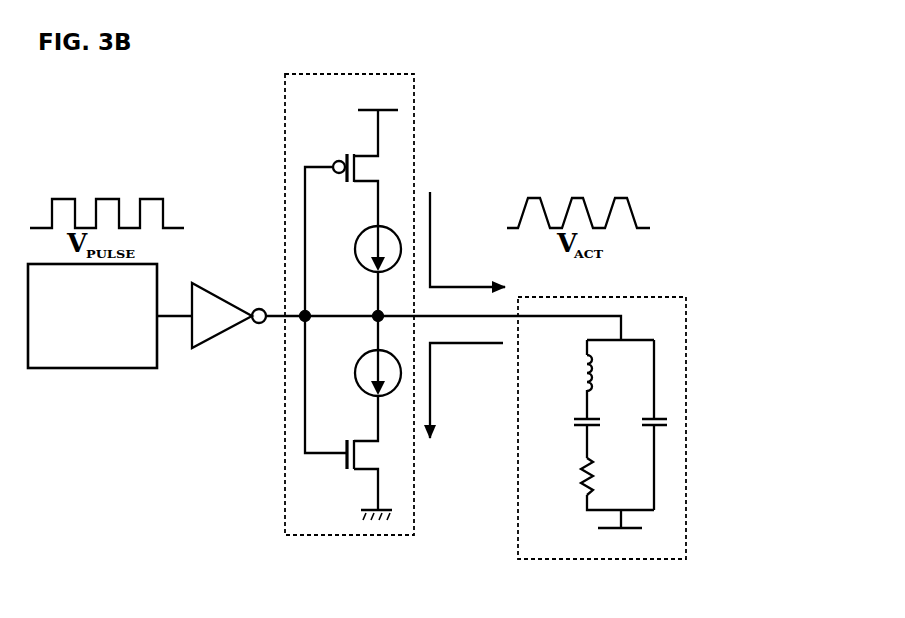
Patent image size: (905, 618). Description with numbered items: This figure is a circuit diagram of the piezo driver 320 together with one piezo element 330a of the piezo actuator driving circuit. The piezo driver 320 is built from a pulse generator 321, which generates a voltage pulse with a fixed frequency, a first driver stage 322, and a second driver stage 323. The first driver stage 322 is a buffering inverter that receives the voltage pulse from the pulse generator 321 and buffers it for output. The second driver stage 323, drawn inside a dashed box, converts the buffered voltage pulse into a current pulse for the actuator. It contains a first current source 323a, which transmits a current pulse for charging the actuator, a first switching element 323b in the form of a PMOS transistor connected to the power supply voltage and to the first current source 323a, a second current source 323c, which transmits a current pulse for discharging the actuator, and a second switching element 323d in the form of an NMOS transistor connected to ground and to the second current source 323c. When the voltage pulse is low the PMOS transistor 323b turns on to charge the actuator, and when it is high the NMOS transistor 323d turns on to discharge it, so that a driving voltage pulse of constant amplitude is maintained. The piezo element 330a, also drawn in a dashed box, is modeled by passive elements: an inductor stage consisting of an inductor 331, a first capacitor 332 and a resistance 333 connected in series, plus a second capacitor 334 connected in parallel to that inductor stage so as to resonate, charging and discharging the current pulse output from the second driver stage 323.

The piezo driver 320 is at (632, 146).
The pulse generator 321 is at (93, 368).
The first driver stage 322 is at (215, 340).
The second driver stage 323 is at (414, 130).
The first current source 323a is at (362, 232).
The first switching element 323b is at (345, 153).
The second current source 323c is at (360, 356).
The second switching element 323d is at (352, 440).
The piezo element 330a is at (686, 357).
The inductor 331 is at (580, 368).
The first capacitor 332 is at (597, 430).
The resistance 333 is at (581, 488).
The second capacitor 334 is at (662, 430).